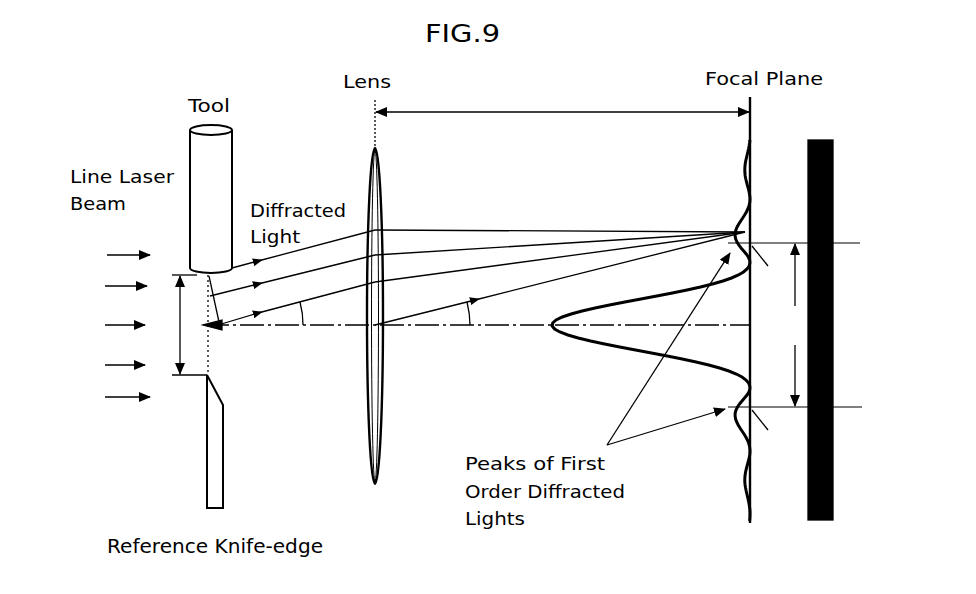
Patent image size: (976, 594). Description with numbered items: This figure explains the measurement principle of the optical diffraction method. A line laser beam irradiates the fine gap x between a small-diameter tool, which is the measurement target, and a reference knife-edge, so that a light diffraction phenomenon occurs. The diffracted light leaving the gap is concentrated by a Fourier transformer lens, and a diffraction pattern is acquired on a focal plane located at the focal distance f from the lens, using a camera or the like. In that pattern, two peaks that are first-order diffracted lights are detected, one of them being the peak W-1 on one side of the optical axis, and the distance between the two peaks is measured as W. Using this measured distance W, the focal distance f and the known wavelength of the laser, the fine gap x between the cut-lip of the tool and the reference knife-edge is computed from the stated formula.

The fine gap x is at (188, 325).
The focal distance f is at (562, 93).
The distance between the peaks W is at (795, 325).
The peak W-1 is at (767, 438).